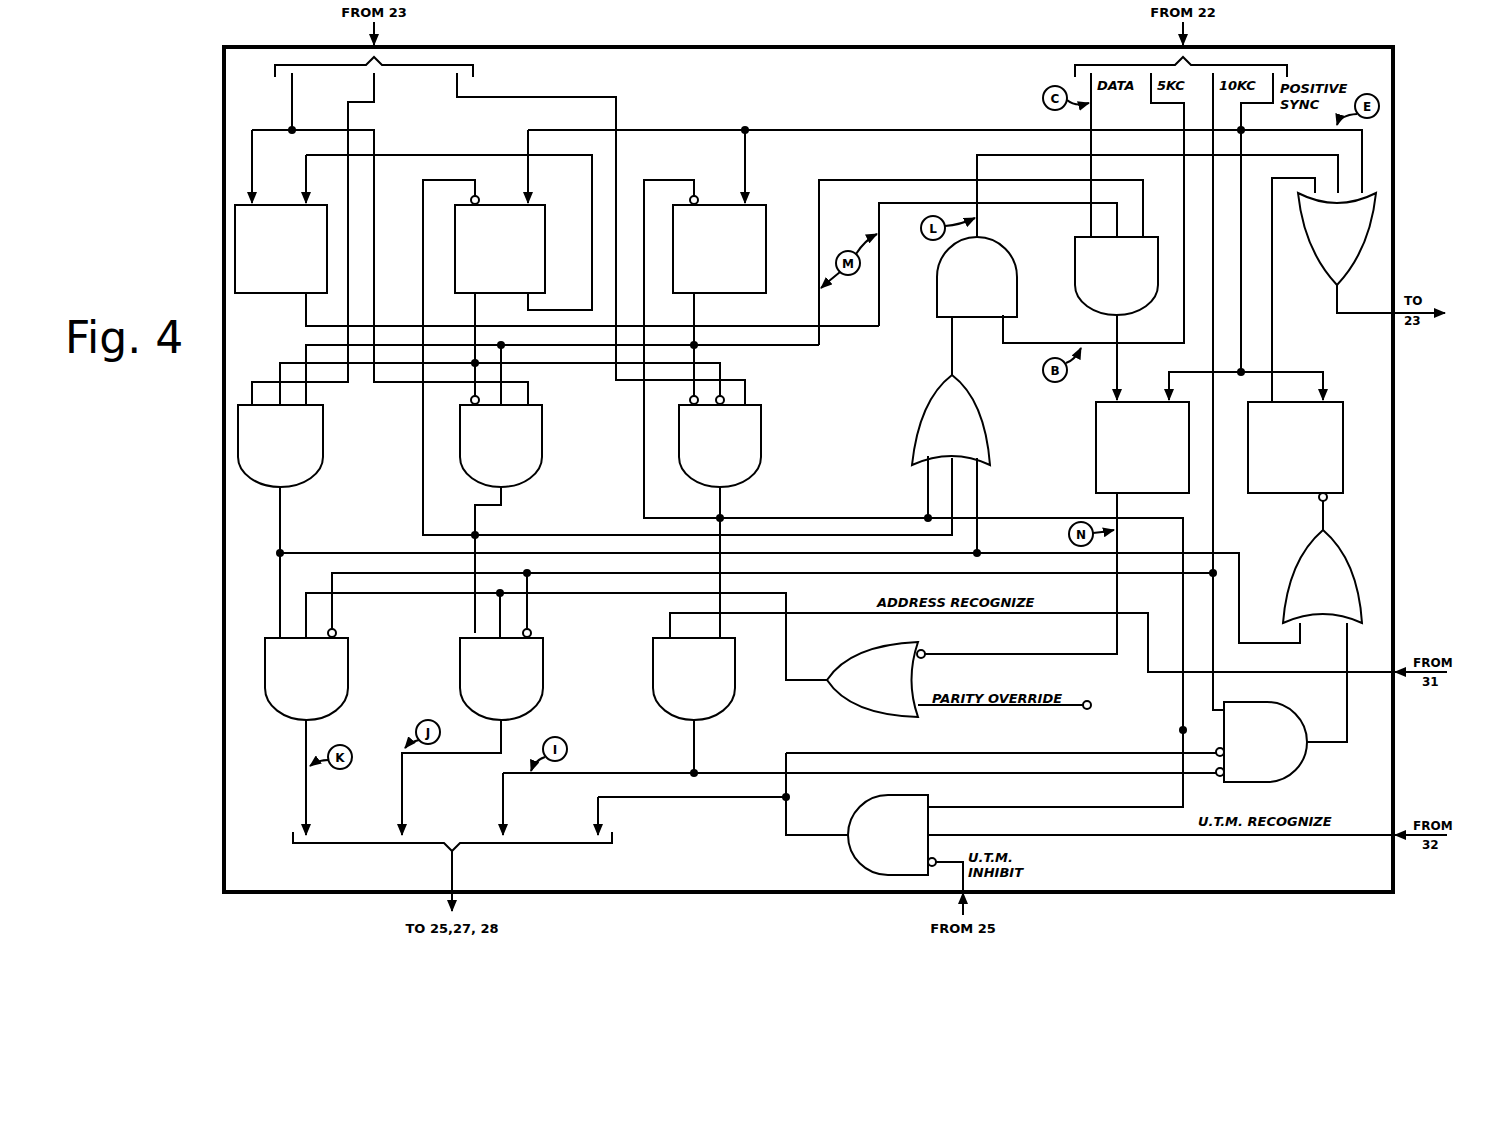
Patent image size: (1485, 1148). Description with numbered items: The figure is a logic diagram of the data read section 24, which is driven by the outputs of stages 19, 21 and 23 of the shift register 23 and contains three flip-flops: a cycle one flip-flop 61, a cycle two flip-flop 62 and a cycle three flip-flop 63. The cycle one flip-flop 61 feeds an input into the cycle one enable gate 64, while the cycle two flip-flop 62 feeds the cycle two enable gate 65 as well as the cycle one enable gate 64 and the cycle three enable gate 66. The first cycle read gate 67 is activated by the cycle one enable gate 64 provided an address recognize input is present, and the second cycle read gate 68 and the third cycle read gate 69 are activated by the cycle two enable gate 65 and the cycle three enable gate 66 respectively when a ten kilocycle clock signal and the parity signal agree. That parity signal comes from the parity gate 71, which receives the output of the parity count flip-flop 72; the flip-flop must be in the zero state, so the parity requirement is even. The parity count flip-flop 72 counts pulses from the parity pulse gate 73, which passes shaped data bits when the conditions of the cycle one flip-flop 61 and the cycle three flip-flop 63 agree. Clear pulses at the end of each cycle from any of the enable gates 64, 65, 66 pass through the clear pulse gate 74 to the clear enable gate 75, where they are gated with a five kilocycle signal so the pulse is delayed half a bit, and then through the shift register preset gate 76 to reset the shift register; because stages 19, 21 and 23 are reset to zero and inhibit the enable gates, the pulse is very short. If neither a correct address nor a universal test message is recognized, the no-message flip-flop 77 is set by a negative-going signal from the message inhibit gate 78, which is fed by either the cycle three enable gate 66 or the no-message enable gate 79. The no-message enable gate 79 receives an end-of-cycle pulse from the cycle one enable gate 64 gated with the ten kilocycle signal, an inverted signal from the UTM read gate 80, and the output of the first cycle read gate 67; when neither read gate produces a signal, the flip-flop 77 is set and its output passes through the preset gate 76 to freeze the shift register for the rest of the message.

The data read section 24 is at (220, 60).
The shift register stage 19 is at (303, 101).
The shift register stage 21 is at (324, 239).
The shift register stage 23 is at (601, 239).
The cycle one flip-flop 61 is at (719, 203).
The cycle two flip-flop 62 is at (501, 203).
The cycle three flip-flop 63 is at (278, 203).
The cycle one enable gate 64 is at (760, 460).
The cycle two enable gate 65 is at (541, 460).
The cycle three enable gate 66 is at (322, 460).
The first cycle read gate 67 is at (735, 690).
The second cycle read gate 68 is at (543, 690).
The third cycle read gate 69 is at (348, 690).
The parity gate 71 is at (840, 702).
The parity count flip-flop 72 is at (1096, 428).
The parity pulse gate 73 is at (1083, 300).
The clear pulse gate 74 is at (915, 405).
The clear enable gate 75 is at (1000, 240).
The shift register preset gate 76 is at (1325, 280).
The no-message flip-flop 77 is at (1343, 440).
The message inhibit gate 78 is at (1303, 545).
The no-message enable gate 79 is at (1285, 700).
The UTM read gate 80 is at (862, 803).